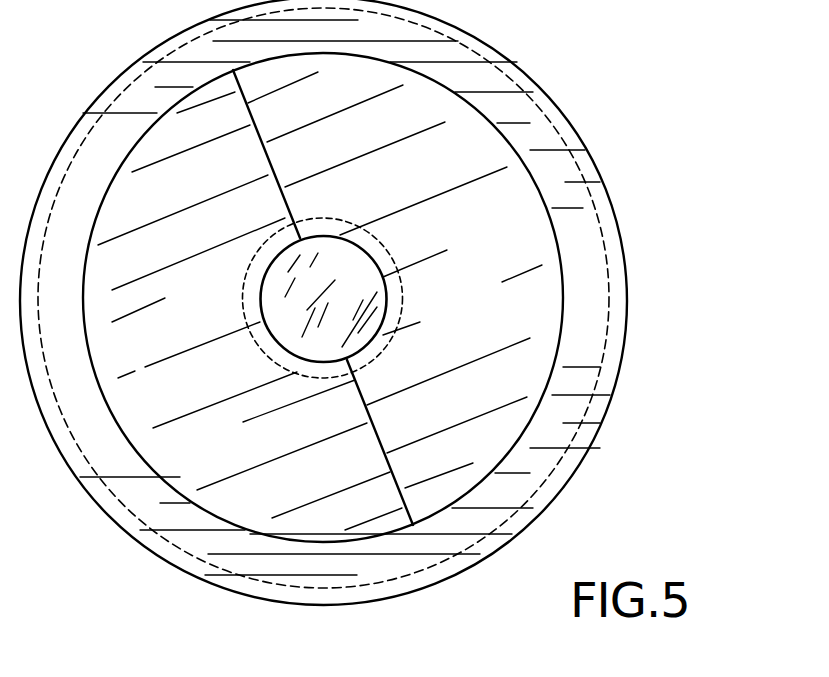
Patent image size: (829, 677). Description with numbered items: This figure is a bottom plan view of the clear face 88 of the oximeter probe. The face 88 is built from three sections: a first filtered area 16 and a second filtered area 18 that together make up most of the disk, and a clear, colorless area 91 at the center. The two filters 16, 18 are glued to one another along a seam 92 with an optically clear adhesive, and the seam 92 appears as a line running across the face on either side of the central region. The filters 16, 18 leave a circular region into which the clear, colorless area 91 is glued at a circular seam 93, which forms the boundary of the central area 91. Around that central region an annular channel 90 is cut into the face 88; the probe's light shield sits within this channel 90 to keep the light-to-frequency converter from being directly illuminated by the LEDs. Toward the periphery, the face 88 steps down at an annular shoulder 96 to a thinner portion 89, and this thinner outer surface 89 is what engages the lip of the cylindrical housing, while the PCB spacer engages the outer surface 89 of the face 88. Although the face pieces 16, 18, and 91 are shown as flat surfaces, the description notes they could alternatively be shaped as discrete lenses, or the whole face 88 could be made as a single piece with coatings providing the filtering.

The face 88 is at (574, 68).
The outer surface 89 is at (550, 138).
The annular shoulder 96 is at (563, 263).
The first filtered area 16 is at (195, 447).
The second filtered area 18 is at (503, 390).
The seam 92 is at (268, 160).
The annular channel 90 is at (245, 284).
The clear, colorless area 91 is at (292, 322).
The circular seam 93 is at (387, 298).